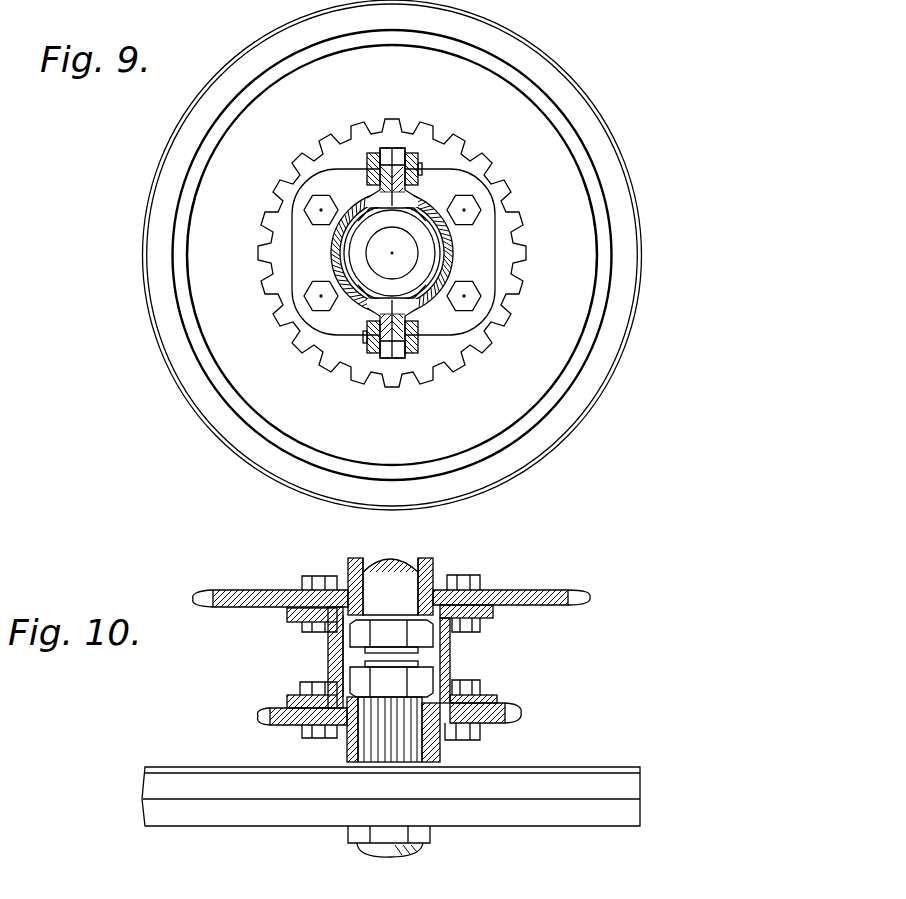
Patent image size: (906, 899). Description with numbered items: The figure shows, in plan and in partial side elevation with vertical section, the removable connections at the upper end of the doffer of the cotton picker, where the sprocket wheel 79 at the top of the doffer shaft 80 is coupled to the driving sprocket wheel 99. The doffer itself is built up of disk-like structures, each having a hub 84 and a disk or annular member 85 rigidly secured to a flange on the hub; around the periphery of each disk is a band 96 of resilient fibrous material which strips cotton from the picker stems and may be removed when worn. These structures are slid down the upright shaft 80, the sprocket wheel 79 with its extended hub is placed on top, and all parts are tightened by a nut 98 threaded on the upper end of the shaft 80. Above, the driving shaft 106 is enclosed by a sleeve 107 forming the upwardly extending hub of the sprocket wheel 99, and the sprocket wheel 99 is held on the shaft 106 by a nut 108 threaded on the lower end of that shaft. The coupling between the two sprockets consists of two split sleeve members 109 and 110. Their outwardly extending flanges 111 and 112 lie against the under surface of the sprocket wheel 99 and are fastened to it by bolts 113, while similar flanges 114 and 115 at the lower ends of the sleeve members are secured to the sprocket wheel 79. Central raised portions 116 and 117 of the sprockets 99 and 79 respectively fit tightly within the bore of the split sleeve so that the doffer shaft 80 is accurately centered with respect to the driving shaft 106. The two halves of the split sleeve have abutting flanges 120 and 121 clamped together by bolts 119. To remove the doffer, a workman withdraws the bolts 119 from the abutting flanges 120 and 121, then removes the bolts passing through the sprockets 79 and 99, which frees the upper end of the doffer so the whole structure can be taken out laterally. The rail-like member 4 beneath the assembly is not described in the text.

In FIG. 9, the rail 4 is at (140, 270).
In FIG. 10, the rail 4 is at (143, 778).
In FIG. 9, the sprocket wheel 79 is at (507, 313).
In FIG. 10, the sprocket wheel 79 is at (527, 712).
In FIG. 9, the doffer shaft 80 is at (410, 260).
In FIG. 10, the doffer shaft 80 is at (380, 737).
In FIG. 10, the hub 84 is at (348, 835).
In FIG. 9, the disk or annular member 85 is at (220, 330).
In FIG. 9, the peripheral band 96 is at (146, 300).
In FIG. 10, the peripheral band 96 is at (160, 802).
In FIG. 9, the nut 98 is at (425, 243).
In FIG. 10, the nut 98 is at (447, 668).
In FIG. 10, the sprocket wheel 99 is at (590, 590).
In FIG. 10, the driving shaft 106 is at (395, 570).
In FIG. 10, the sleeve 107 is at (433, 572).
In FIG. 10, the nut 108 is at (350, 636).
In FIG. 9, the split sleeve member 109 is at (432, 210).
In FIG. 10, the split sleeve member 109 is at (450, 650).
In FIG. 9, the split sleeve member 110 is at (357, 200).
In FIG. 10, the split sleeve member 110 is at (328, 633).
In FIG. 10, the outwardly extending flange 111 is at (493, 612).
In FIG. 10, the outwardly extending flange 112 is at (285, 615).
In FIG. 10, the bolts 113 is at (300, 590).
In FIG. 9, the flange 114 is at (475, 218).
In FIG. 10, the flange 114 is at (483, 690).
In FIG. 9, the flange 115 is at (317, 233).
In FIG. 10, the flange 115 is at (290, 698).
In FIG. 10, the central raised portion 116 is at (435, 634).
In FIG. 10, the central raised portion 117 is at (350, 684).
In FIG. 9, the bolts 119 is at (378, 165).
In FIG. 9, the abutting flange 120 is at (390, 150).
In FIG. 9, the abutting flange 121 is at (405, 155).